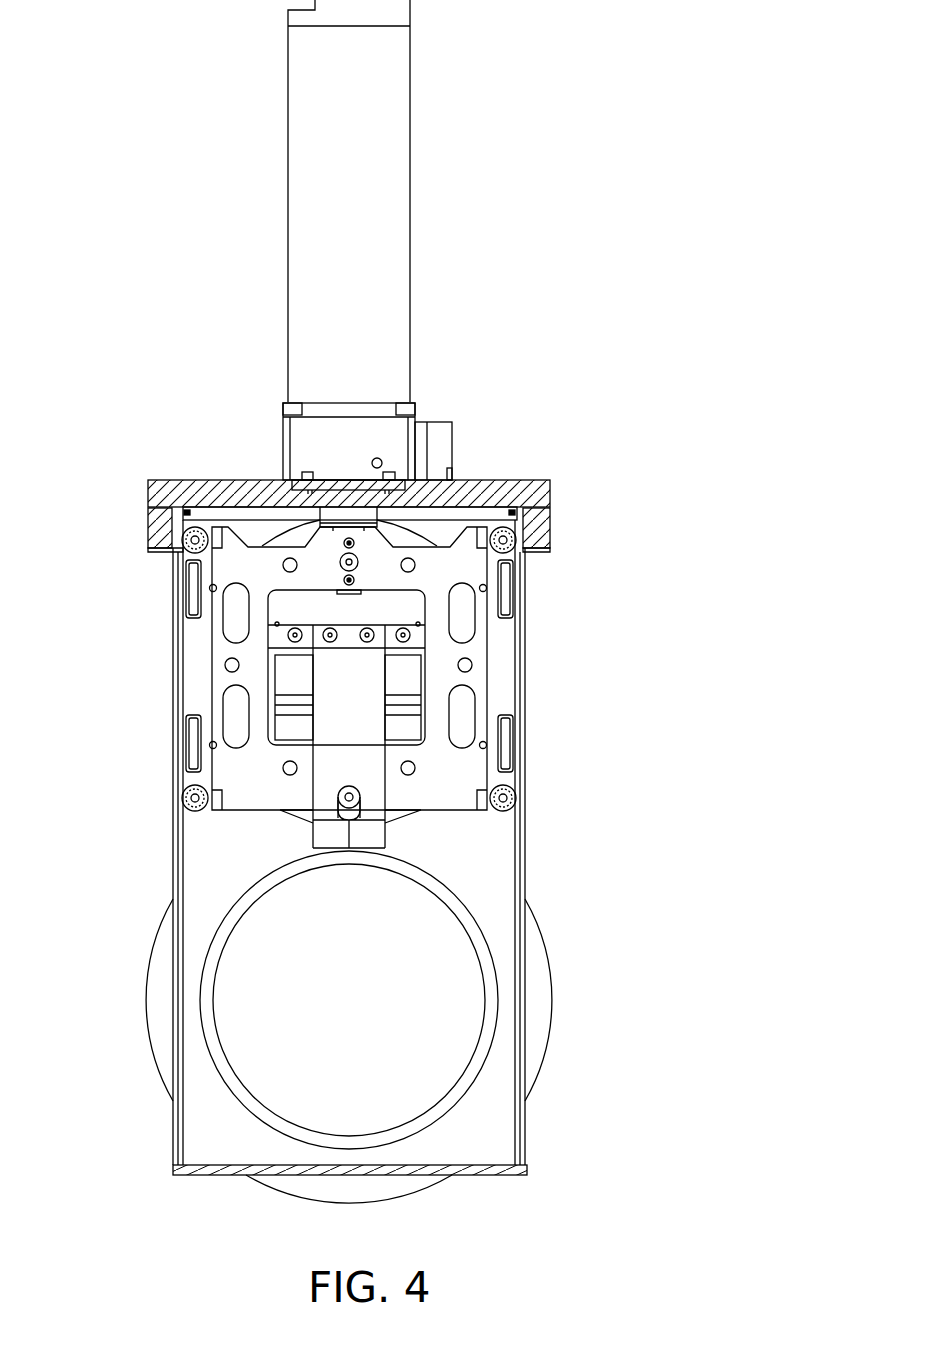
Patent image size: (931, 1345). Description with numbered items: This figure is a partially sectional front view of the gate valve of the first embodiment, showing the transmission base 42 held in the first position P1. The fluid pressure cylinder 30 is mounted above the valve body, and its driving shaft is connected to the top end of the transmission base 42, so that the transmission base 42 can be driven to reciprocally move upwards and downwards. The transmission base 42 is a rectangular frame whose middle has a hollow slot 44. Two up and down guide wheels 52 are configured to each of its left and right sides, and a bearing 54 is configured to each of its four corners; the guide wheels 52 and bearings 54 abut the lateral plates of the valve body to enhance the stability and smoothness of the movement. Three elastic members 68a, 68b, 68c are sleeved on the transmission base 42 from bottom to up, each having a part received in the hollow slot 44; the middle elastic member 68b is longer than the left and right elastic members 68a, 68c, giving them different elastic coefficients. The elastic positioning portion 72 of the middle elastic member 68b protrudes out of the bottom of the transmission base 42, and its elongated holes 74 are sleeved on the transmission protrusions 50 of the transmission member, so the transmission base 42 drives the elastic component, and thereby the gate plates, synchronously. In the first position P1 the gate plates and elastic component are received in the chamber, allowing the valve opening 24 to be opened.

The fluid pressure cylinder 30 is at (421, 162).
The transmission base 42 is at (223, 548).
The hollow slot 44 is at (430, 672).
The transmission protrusion 50 is at (337, 799).
The guide wheel 52 is at (196, 592).
The bearing 54 is at (182, 800).
The elastic member 68a is at (301, 621).
The elastic member 68b is at (355, 618).
The elastic member 68c is at (410, 618).
The elastic positioning portion 72 is at (367, 846).
The elongated hole 74 is at (343, 821).
The valve opening 24 is at (435, 1062).
The first position P1 is at (463, 825).